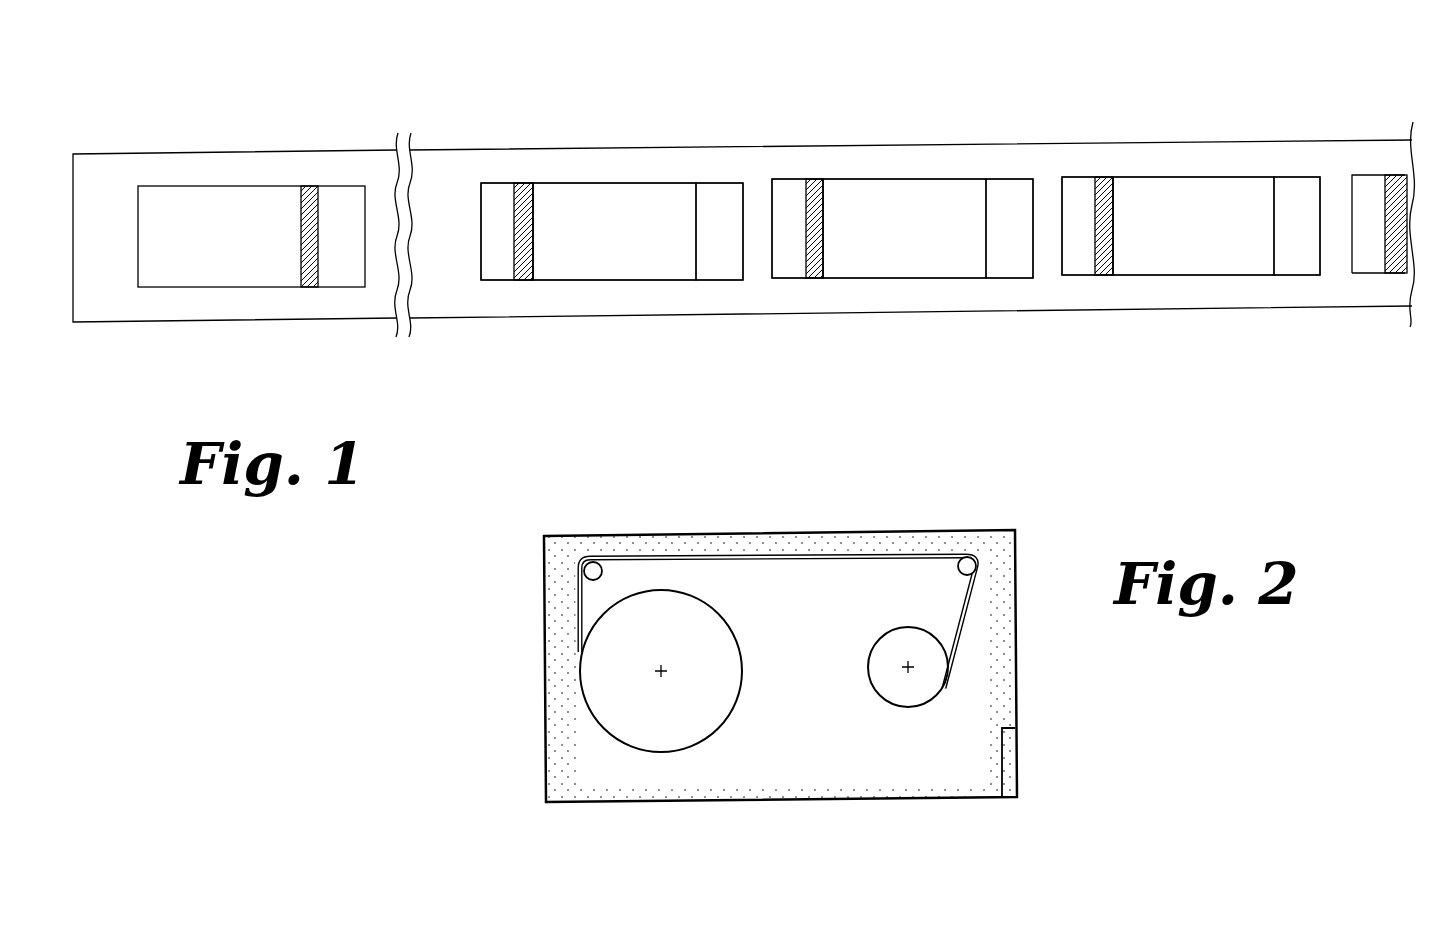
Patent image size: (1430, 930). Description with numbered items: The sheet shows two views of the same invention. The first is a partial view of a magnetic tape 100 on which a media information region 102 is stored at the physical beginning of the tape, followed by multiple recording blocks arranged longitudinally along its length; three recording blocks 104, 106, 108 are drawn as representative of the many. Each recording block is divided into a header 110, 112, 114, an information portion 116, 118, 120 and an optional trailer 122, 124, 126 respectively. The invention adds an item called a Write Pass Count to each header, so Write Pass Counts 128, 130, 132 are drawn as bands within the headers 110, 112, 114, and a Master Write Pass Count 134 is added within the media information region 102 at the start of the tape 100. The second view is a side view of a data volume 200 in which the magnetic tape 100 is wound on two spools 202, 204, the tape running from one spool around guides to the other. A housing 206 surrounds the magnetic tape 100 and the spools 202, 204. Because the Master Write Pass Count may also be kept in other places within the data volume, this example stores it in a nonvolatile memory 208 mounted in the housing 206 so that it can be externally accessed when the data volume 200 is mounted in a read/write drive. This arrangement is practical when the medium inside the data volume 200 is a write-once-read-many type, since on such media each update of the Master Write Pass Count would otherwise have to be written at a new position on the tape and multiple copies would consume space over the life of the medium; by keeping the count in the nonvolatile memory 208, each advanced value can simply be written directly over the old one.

In FIG. 1, the magnetic tape 100 is at (101, 167).
In FIG. 2, the magnetic tape 100 is at (845, 552).
In FIG. 1, the media information region 102 is at (365, 336).
In FIG. 1, the recording block 104 is at (743, 334).
In FIG. 1, the recording block 106 is at (1033, 331).
In FIG. 1, the recording block 108 is at (1320, 328).
In FIG. 1, the header 110 is at (532, 125).
In FIG. 1, the header 112 is at (822, 123).
In FIG. 1, the header 114 is at (1112, 122).
In FIG. 1, the information 116 is at (627, 195).
In FIG. 1, the information 118 is at (920, 192).
In FIG. 1, the information 120 is at (1203, 187).
In FIG. 1, the trailer 122 is at (718, 193).
In FIG. 1, the trailer 124 is at (1010, 190).
In FIG. 1, the trailer 126 is at (1295, 187).
In FIG. 1, the Write Pass Count 128 is at (527, 203).
In FIG. 1, the Write Pass Count 130 is at (825, 200).
In FIG. 1, the Write Pass Count 132 is at (1103, 197).
In FIG. 1, the Master Write Pass Count 134 is at (316, 214).
In FIG. 2, the data volume 200 is at (728, 494).
In FIG. 2, the spool 202 is at (600, 702).
In FIG. 2, the spool 204 is at (935, 685).
In FIG. 2, the housing 206 is at (613, 802).
In FIG. 2, the nonvolatile memory 208 is at (1008, 750).